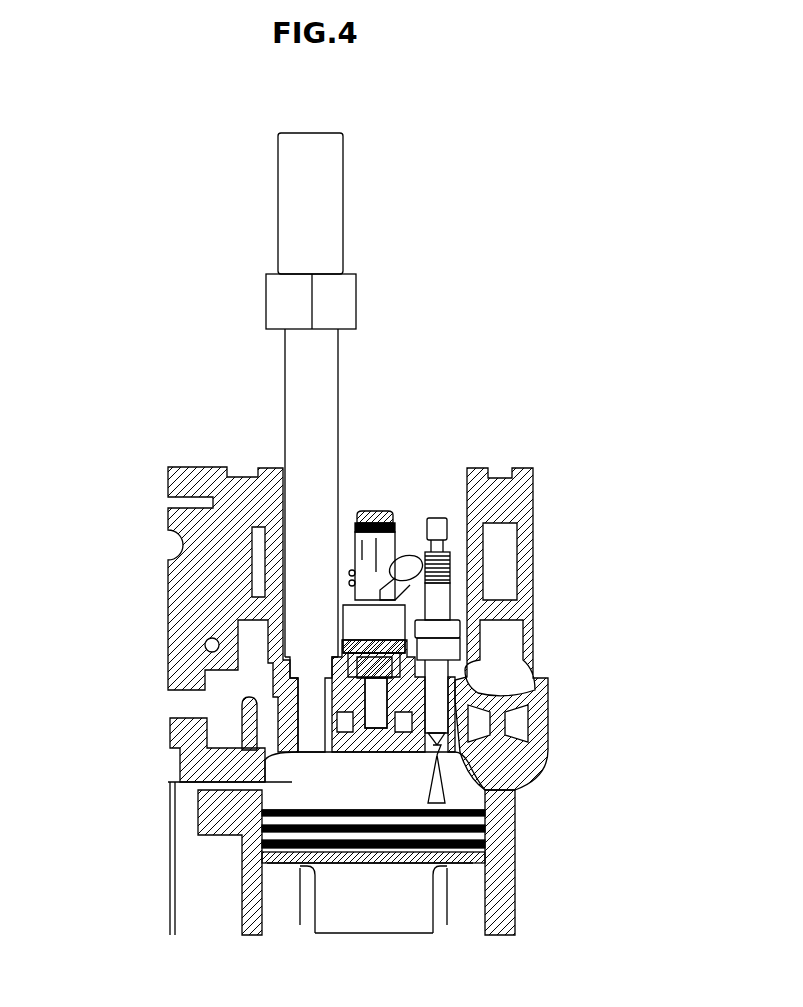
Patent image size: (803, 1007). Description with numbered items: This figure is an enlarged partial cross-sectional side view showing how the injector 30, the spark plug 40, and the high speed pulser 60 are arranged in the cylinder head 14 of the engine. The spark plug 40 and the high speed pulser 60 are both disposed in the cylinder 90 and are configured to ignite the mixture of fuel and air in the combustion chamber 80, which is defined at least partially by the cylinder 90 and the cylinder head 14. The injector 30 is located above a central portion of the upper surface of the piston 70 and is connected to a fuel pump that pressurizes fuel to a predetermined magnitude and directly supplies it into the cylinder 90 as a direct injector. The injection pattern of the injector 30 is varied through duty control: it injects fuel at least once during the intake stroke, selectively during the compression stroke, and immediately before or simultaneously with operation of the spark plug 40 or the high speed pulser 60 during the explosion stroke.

The cylinder head 14 is at (198, 581).
The high speed pulser 60 is at (298, 395).
The injector 30 is at (377, 517).
The spark plug 40 is at (440, 595).
The combustion chamber 80 is at (327, 772).
The cylinder 90 is at (463, 887).
The piston 70 is at (338, 912).